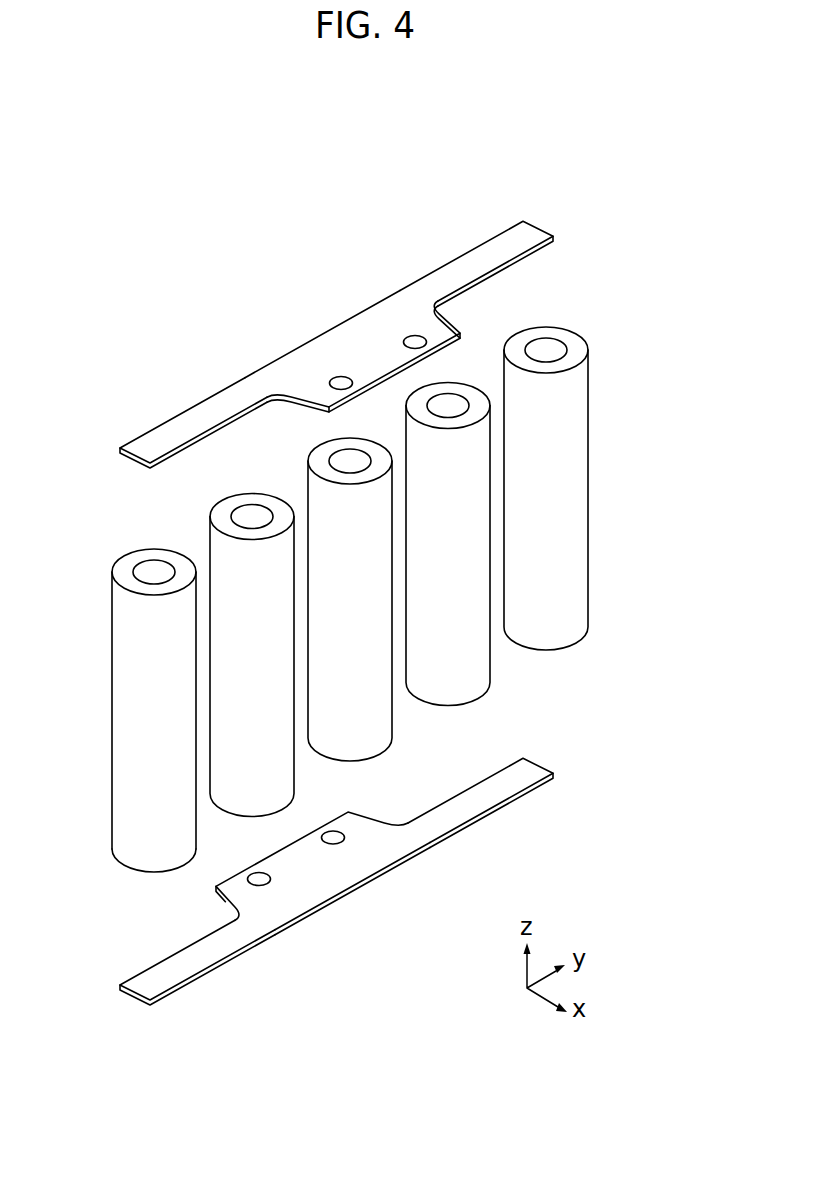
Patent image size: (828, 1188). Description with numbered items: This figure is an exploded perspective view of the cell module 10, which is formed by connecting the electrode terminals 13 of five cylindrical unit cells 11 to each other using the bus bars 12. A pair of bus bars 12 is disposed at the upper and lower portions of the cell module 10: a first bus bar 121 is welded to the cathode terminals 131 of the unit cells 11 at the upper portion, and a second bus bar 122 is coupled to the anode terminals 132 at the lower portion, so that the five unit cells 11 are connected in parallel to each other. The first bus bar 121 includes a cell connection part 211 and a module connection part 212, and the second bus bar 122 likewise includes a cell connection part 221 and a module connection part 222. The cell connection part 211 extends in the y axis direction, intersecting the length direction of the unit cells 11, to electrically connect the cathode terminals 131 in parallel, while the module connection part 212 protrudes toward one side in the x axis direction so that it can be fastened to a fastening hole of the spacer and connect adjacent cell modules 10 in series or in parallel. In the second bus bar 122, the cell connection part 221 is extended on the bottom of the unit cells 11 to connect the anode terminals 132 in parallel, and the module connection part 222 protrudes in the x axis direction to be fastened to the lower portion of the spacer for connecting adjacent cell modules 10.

The cell module 10 is at (234, 288).
The unit cell 11 is at (584, 483).
The bus bar 12 is at (643, 760).
The first bus bar 121 is at (553, 219).
The second bus bar 122 is at (540, 752).
The electrode terminal 13 is at (643, 857).
The cathode terminal 131 is at (147, 567).
The anode terminal 132 is at (150, 869).
The cell connection part 211 is at (227, 392).
The module connection part 212 is at (443, 331).
The cell connection part 221 is at (207, 958).
The module connection part 222 is at (217, 887).